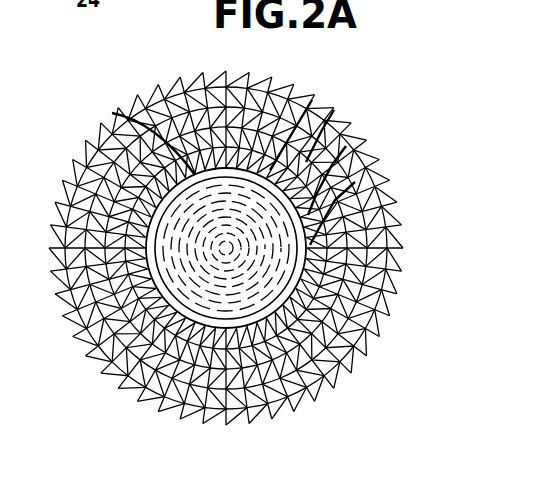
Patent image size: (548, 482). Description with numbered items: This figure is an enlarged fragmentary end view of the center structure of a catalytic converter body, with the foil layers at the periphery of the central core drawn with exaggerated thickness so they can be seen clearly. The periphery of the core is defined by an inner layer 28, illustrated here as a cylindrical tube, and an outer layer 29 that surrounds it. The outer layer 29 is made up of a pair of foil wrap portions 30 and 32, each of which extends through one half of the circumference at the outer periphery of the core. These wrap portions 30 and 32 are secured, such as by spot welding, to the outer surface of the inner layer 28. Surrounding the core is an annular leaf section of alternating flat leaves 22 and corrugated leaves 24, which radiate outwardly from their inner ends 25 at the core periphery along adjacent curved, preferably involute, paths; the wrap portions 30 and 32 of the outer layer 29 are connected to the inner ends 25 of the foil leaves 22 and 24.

The flat leaves 22 is at (334, 110).
The corrugated leaves 24 is at (346, 146).
The inner ends 25 is at (355, 182).
The inner layer 28 is at (273, 302).
The outer layer 29 is at (293, 290).
The foil wrap portion 30 is at (312, 100).
The foil wrap portion 32 is at (112, 113).